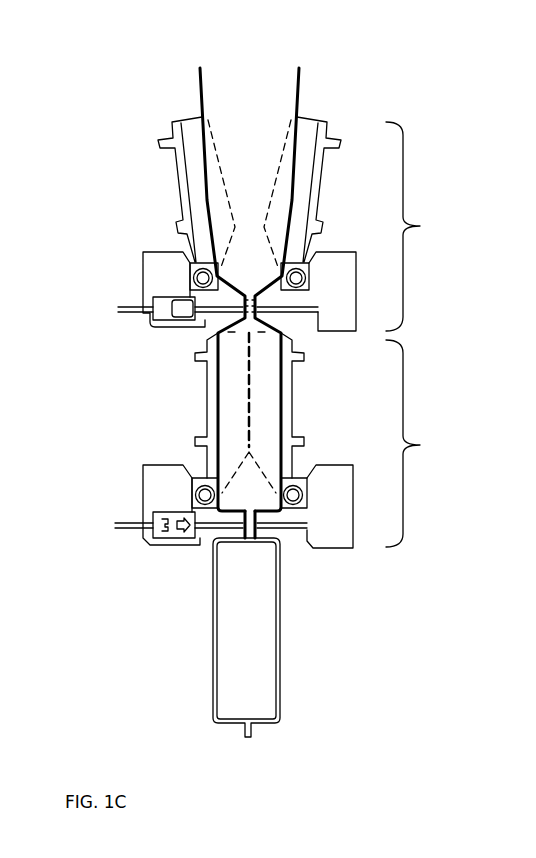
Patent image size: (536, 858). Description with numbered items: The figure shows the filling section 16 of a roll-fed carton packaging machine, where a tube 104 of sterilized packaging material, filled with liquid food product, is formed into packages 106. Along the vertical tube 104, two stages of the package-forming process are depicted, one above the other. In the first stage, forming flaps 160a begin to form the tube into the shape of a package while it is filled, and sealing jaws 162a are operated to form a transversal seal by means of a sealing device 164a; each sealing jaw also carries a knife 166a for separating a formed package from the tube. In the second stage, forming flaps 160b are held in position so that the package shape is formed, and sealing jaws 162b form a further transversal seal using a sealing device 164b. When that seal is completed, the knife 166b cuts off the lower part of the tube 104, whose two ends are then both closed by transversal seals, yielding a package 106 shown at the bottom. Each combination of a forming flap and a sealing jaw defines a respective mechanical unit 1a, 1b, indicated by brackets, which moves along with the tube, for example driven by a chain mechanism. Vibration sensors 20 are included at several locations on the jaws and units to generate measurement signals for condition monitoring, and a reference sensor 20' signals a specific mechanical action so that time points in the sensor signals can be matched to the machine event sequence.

The filling section 16 is at (126, 111).
The tube 104 is at (272, 95).
The forming flap 160a is at (180, 172).
The sealing jaw 162a is at (155, 263).
The knife 166a is at (202, 323).
The sealing device 164a is at (257, 318).
The forming flap 160b is at (212, 391).
The sealing jaw 162b is at (155, 483).
The knife 166b is at (213, 525).
The sealing device 164b is at (257, 528).
The package 106 is at (257, 640).
The vibration sensor 20 is at (335, 400).
The reference sensor 20' is at (323, 242).
The mechanical unit 1a is at (417, 226).
The mechanical unit 1b is at (417, 443).